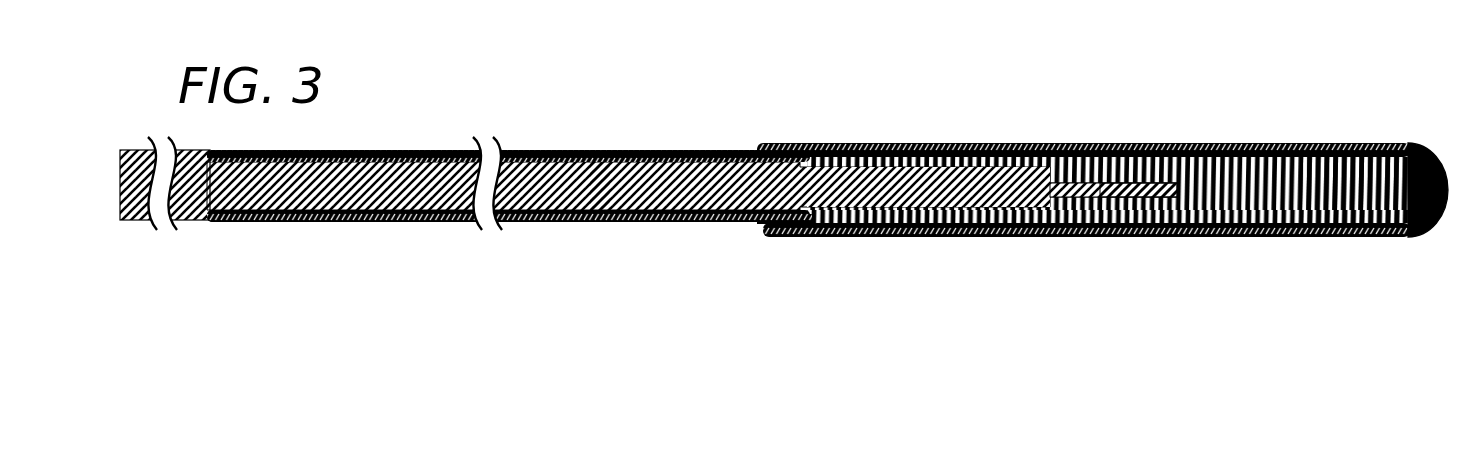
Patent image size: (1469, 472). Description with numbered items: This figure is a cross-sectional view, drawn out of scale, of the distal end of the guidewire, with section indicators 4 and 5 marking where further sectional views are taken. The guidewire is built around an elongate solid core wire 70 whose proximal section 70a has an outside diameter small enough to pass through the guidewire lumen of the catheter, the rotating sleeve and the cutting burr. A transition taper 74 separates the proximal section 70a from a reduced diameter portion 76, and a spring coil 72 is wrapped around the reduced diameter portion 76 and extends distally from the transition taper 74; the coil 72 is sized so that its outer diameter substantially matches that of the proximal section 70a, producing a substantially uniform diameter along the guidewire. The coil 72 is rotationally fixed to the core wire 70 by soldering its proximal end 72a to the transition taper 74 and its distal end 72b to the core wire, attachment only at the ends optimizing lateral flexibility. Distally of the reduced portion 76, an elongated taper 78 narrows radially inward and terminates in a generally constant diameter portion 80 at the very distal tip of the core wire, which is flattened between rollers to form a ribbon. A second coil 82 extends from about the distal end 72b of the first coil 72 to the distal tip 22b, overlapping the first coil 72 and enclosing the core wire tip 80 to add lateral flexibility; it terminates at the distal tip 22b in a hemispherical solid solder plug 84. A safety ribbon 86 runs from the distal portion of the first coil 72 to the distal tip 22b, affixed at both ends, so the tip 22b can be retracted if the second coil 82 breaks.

The core wire 70 is at (400, 177).
The proximal section of core wire 70a is at (115, 237).
The spring coil 72 is at (567, 150).
The proximal end of coil 72a is at (210, 222).
The distal end of coil 72b is at (813, 226).
The transition taper 74 is at (208, 150).
The reduced diameter portion 76 is at (600, 193).
The taper 78 is at (907, 195).
The constant diameter portion 80 is at (1122, 198).
The second coil 82 is at (1017, 143).
The hemispherical solid plug 84 is at (1423, 235).
The safety ribbon 86 is at (1173, 147).
The distal tip of guidewire 22b is at (1443, 255).
The section line 5 is at (833, 145).
The section line 4 is at (1443, 170).